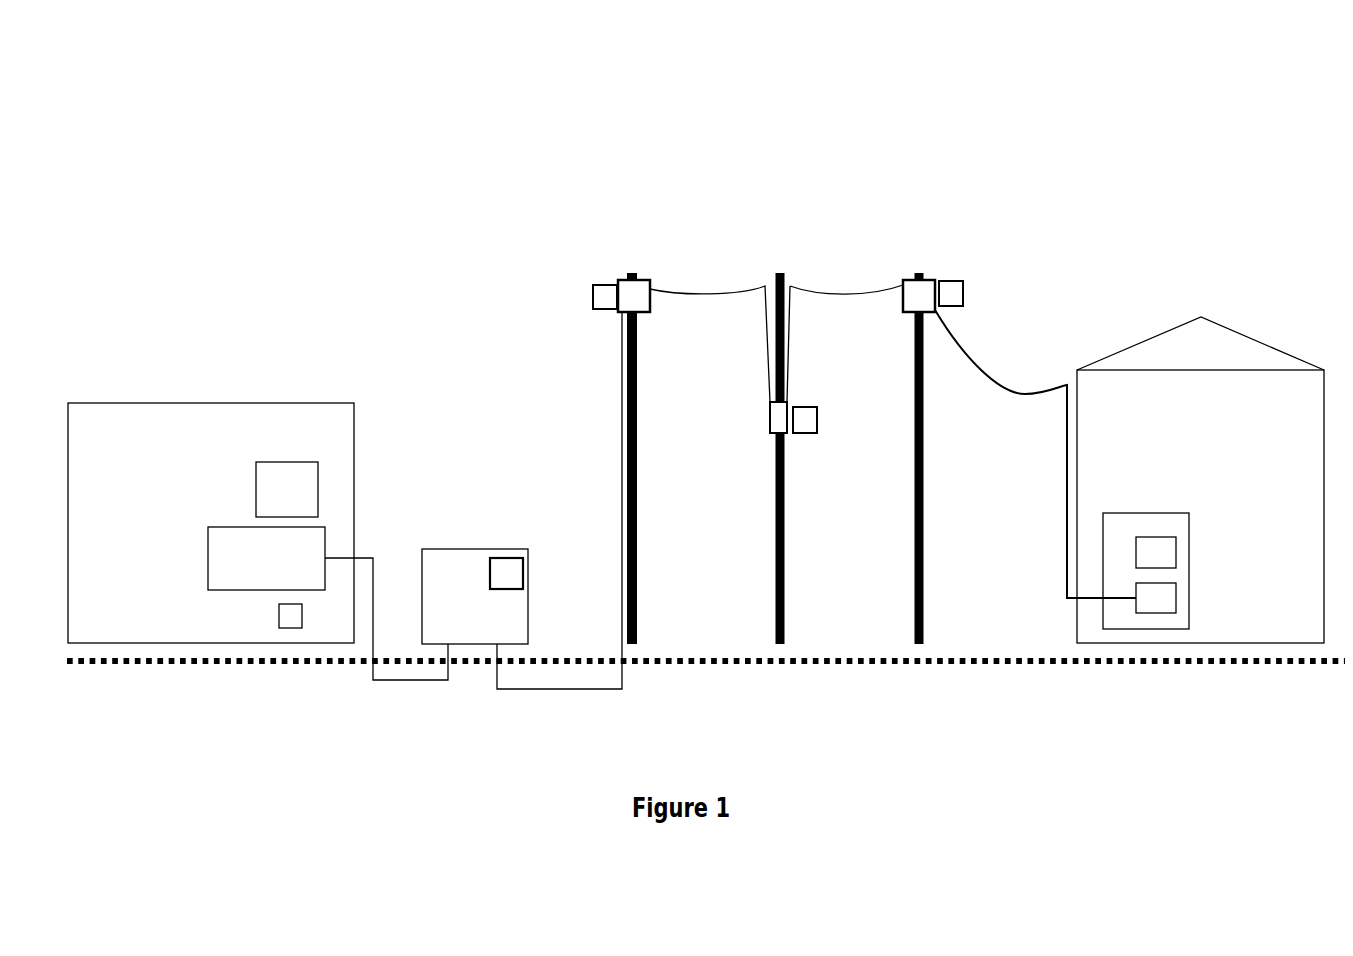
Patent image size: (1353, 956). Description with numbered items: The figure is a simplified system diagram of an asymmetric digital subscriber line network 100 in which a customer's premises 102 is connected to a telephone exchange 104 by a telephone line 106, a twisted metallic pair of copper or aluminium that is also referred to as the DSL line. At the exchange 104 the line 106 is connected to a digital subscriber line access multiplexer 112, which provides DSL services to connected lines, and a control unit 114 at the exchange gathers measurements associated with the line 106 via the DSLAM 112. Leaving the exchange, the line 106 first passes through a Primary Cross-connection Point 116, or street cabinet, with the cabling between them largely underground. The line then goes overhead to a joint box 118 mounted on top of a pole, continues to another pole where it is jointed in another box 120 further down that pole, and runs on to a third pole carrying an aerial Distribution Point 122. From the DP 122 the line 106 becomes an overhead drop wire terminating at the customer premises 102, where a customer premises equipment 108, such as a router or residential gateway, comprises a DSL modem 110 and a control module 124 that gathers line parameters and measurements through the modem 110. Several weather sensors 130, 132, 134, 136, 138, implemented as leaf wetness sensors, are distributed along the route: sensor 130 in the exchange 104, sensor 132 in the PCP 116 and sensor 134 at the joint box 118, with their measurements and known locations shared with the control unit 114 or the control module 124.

The ADSL network 100 is at (569, 86).
The customer premises 102 is at (1200, 313).
The telephone exchange 104 is at (118, 396).
The telephone line 106 is at (615, 473).
The customer premises equipment 108 is at (1192, 545).
The DSL modem 110 is at (1176, 585).
The digital subscriber line access multiplexer 112 is at (208, 526).
The control unit 114 is at (268, 468).
The Primary Cross-connection Point 116 is at (434, 540).
The joint box 118 is at (620, 268).
The joint box 120 is at (762, 405).
The aerial Distribution Point 122 is at (906, 266).
The control module 124 is at (1155, 530).
The weather sensor 130 is at (304, 610).
The weather sensor 132 is at (507, 553).
The weather sensor 134 is at (591, 289).
The weather sensor 136 is at (819, 424).
The weather sensor 138 is at (965, 297).